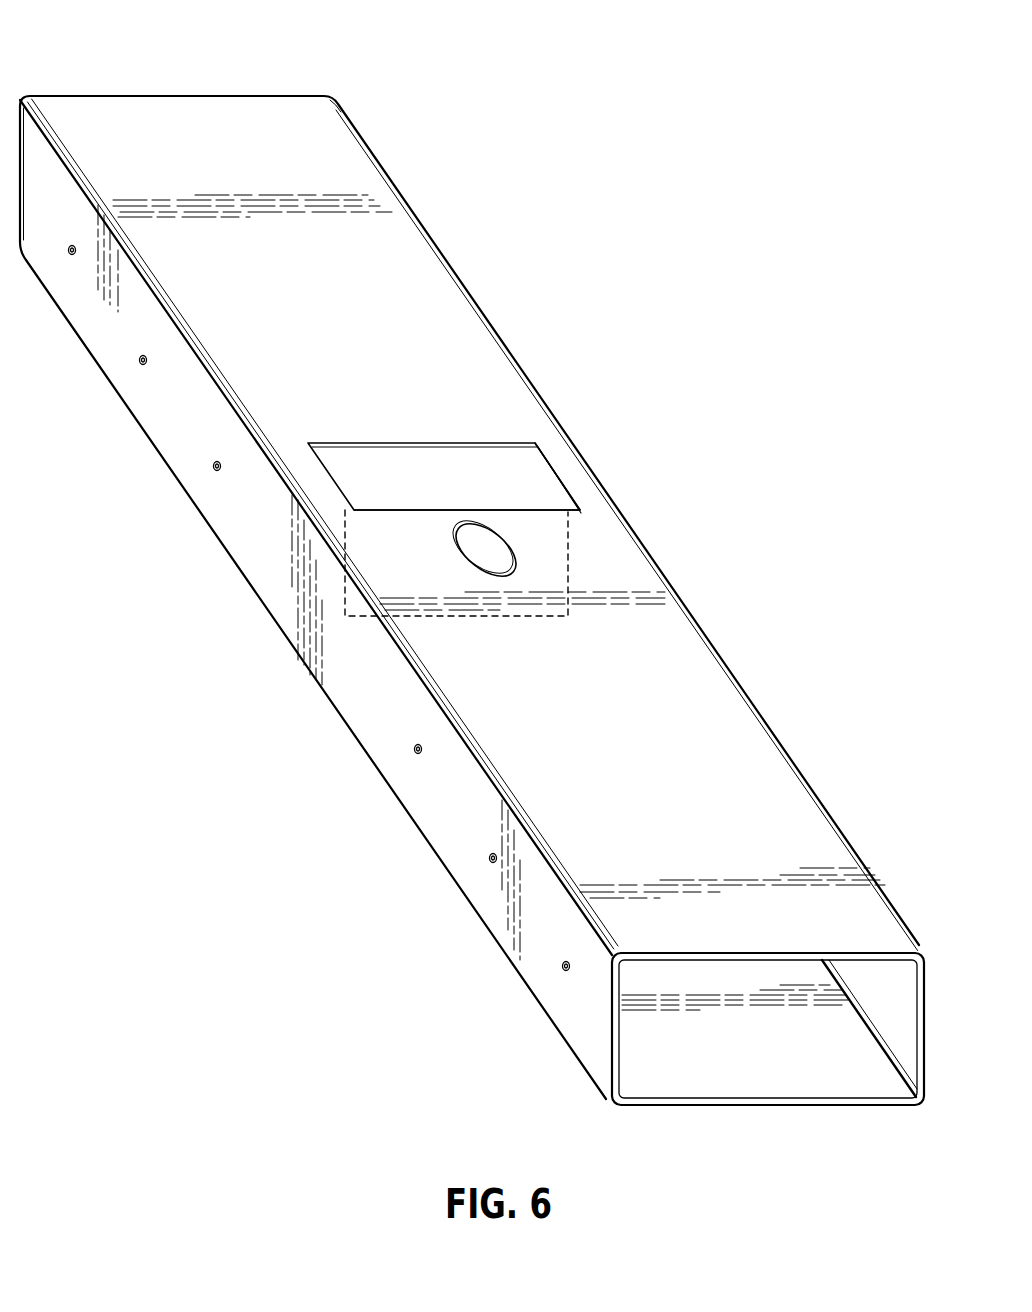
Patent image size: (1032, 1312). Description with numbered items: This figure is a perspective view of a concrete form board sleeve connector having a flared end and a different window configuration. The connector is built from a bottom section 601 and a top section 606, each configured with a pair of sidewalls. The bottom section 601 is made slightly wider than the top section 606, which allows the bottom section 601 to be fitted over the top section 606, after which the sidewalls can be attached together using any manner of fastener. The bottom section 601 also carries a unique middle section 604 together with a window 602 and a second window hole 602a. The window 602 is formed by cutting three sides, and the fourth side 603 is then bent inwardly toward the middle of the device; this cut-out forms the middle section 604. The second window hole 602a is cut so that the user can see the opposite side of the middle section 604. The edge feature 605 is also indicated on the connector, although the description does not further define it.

The bottom section 601 is at (457, 328).
The window 602 is at (523, 482).
The second window hole 602a is at (457, 562).
The fourth side 603 is at (543, 506).
The middle section 604 is at (552, 549).
The rounded edge 605 is at (183, 92).
The top section 606 is at (784, 1077).